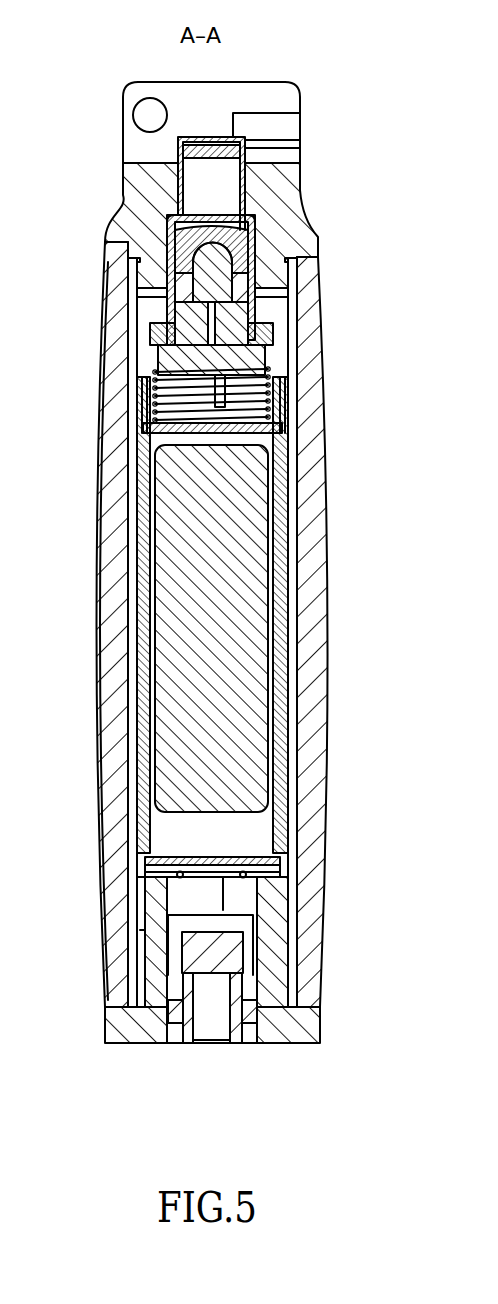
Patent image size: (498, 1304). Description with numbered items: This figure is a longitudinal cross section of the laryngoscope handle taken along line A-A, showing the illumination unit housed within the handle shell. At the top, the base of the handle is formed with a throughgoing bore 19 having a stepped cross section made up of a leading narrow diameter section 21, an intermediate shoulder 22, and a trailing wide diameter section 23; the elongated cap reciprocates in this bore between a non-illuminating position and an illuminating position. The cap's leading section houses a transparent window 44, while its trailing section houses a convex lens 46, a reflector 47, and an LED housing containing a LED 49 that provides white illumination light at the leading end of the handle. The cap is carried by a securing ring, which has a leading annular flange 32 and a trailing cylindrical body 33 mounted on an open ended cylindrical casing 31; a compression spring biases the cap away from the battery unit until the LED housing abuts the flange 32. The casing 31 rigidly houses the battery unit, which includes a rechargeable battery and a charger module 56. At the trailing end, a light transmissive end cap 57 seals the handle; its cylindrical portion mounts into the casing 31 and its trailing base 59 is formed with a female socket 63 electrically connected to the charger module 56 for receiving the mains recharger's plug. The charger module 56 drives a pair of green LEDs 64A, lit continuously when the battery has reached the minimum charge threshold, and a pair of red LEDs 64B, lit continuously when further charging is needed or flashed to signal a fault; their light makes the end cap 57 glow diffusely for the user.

The throughgoing bore 19 is at (257, 207).
The leading narrow diameter section 21 is at (250, 187).
The intermediate shoulder 22 is at (263, 233).
The trailing wide diameter section 23 is at (257, 250).
The cylindrical casing 31 is at (147, 626).
The leading annular flange 32 is at (135, 313).
The trailing cylindrical body 33 is at (130, 355).
The transparent window 44 is at (223, 133).
The convex lens 46 is at (173, 218).
The reflector 47 is at (130, 252).
The LED 49 is at (167, 242).
The charger module 56 is at (235, 857).
The light transmissive end cap 57 is at (272, 960).
The trailing base 59 is at (318, 1022).
The female socket 63 is at (205, 1040).
The green LEDs 64A is at (165, 872).
The red LEDs 64B is at (257, 877).